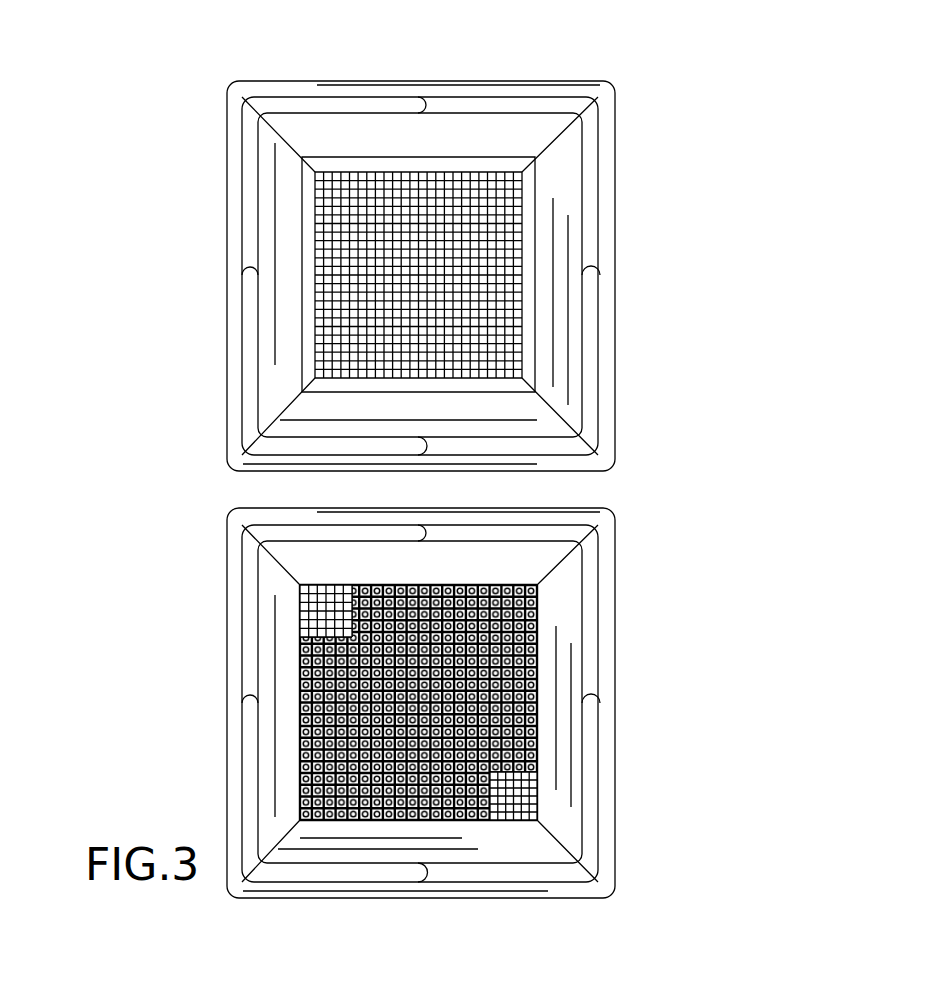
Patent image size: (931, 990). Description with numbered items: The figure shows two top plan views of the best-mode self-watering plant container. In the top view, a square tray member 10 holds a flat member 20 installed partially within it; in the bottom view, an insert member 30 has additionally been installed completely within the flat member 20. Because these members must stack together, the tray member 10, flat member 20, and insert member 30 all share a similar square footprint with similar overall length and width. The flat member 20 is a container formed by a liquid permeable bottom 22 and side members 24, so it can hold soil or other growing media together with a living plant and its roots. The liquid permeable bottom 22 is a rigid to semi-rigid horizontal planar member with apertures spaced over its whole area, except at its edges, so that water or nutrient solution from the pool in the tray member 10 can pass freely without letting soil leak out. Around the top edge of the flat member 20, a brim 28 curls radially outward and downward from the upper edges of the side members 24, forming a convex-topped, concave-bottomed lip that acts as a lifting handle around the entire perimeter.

The tray member 10 is at (610, 183).
The flat member 20 is at (590, 335).
The liquid permeable bottom 22 is at (333, 211).
The side member 24 is at (480, 136).
The brim 28 is at (588, 127).
The insert member 30 is at (530, 597).